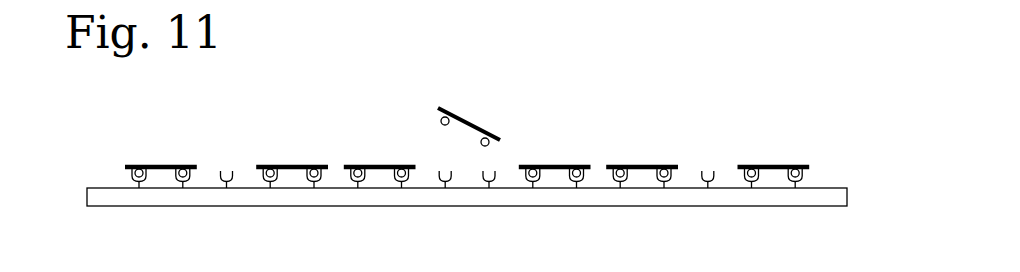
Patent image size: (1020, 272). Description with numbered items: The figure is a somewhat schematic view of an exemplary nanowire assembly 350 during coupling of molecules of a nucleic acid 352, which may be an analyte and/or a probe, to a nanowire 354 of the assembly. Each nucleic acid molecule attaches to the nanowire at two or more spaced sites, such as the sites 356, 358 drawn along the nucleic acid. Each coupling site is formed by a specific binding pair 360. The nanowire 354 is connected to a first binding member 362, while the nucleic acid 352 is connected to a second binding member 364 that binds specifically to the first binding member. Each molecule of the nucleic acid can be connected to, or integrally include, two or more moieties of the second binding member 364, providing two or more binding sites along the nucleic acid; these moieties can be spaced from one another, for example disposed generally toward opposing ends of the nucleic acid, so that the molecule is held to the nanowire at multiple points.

The nanowire assembly 350 is at (213, 101).
The nucleic acid 352 is at (292, 164).
The nanowire 354 is at (632, 207).
The site 356 is at (256, 182).
The site 358 is at (300, 183).
The specific binding pair 360 is at (330, 171).
The first binding member 362 is at (440, 183).
The second binding member 364 is at (440, 124).